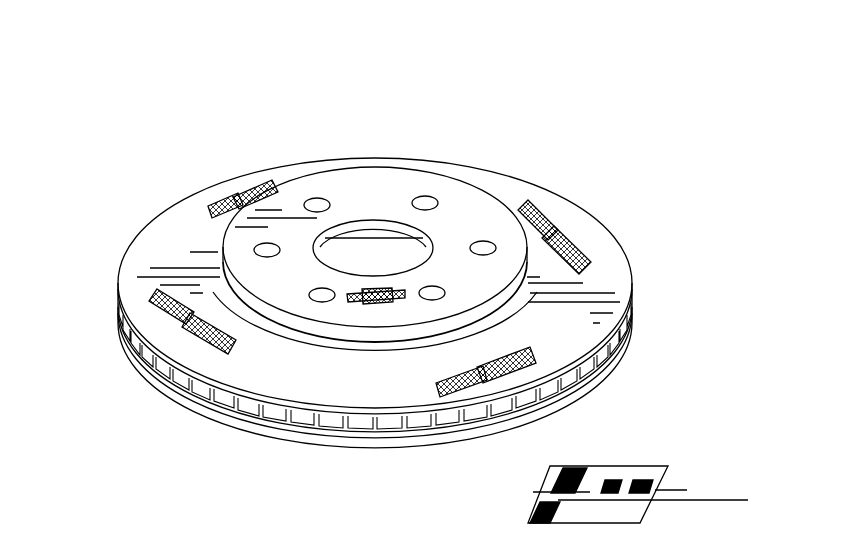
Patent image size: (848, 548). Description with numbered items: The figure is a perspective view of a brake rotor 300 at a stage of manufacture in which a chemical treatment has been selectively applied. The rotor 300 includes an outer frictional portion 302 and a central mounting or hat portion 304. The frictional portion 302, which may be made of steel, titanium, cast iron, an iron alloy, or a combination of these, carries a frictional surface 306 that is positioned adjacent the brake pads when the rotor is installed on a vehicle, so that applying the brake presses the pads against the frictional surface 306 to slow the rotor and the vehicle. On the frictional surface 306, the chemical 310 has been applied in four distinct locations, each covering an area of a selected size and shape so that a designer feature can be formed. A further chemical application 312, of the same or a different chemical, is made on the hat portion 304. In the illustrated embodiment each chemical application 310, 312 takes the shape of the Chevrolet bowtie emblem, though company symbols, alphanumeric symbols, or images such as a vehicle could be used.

The rotor 300 is at (533, 120).
The frictional portion 302 is at (294, 165).
The hat portion 304 is at (401, 168).
The frictional surface 306 is at (170, 232).
The chemical 310 is at (578, 212).
The chemical application 312 is at (385, 302).